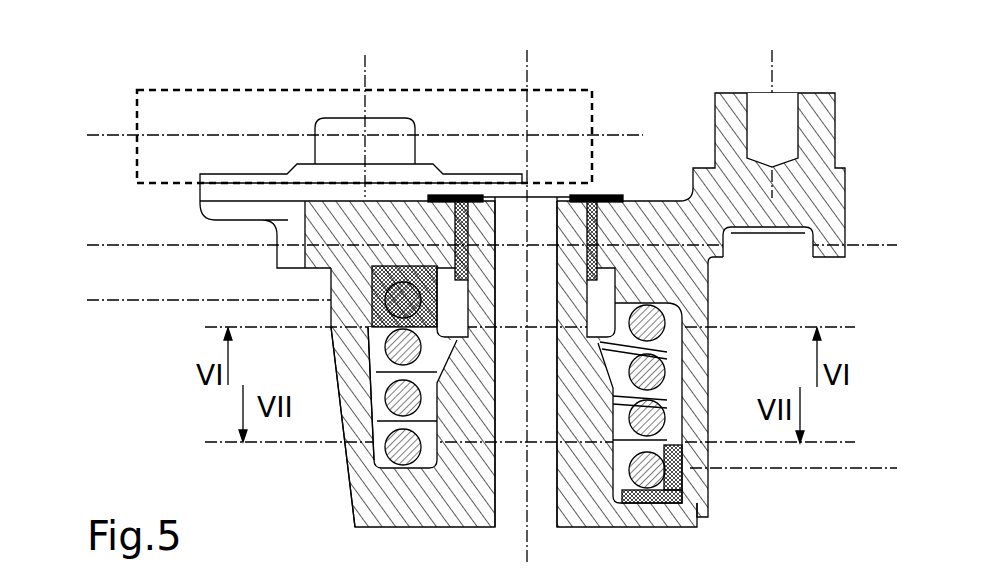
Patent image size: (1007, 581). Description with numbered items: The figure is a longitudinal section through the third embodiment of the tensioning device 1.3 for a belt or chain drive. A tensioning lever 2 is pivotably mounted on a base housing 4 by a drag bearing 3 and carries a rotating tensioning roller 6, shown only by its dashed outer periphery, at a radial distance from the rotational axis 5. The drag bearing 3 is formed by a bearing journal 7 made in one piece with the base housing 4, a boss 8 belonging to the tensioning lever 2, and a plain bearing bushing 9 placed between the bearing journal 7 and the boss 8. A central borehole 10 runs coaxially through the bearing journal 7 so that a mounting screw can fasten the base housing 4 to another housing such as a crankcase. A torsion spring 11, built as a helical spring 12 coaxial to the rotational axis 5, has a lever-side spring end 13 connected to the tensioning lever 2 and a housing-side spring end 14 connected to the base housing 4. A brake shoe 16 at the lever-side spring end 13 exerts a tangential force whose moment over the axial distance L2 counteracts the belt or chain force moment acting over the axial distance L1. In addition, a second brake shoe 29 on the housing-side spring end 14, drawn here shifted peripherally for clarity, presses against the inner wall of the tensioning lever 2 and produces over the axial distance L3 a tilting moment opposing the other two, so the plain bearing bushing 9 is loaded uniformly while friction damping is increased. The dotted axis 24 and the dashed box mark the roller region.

The tensioning lever 2 is at (793, 197).
The drag bearing 3 is at (563, 185).
The base housing 4 is at (388, 492).
The rotational axis 5 is at (527, 67).
The tensioning roller 6 is at (218, 88).
The bearing journal 7 is at (480, 233).
The boss 8 is at (606, 250).
The plain bearing bushing 9 is at (594, 212).
The central borehole 10 is at (510, 498).
The torsion spring 11 is at (647, 372).
The helical spring 12 is at (647, 372).
The lever-side spring end 13 is at (400, 300).
The housing-side spring end 14 is at (684, 473).
The brake shoe 16 is at (343, 328).
The cap axis 24 is at (365, 69).
The second brake shoe 29 is at (692, 503).
The tensioning device 1.3 is at (205, 413).
The axial distance L1 is at (98, 135).
The axial distance L2 is at (98, 330).
The axial distance L3 is at (886, 245).